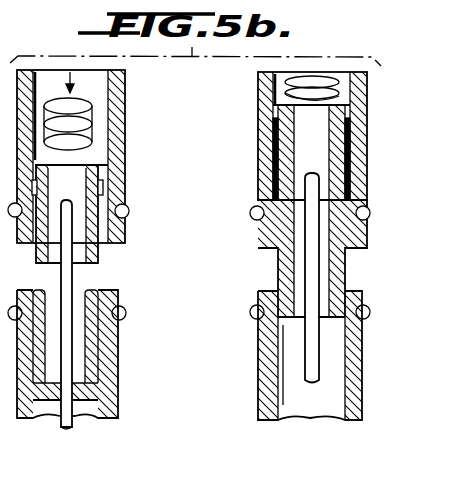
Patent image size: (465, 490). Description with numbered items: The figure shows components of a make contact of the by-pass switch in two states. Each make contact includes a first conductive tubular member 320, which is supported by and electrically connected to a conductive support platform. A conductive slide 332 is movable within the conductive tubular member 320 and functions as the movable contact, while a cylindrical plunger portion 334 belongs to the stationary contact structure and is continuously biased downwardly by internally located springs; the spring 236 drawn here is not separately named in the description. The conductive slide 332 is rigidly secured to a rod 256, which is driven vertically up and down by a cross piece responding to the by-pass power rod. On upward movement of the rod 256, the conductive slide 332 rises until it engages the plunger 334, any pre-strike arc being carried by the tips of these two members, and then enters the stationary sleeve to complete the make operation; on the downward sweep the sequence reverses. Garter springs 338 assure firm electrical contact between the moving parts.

The spring 236 is at (97, 100).
The rod 256 is at (72, 427).
The first conductive tubular member 320 is at (118, 358).
The conductive slide 332 is at (125, 133).
The cylindrical plunger portion 334 is at (100, 263).
The garter springs 338 is at (131, 212).